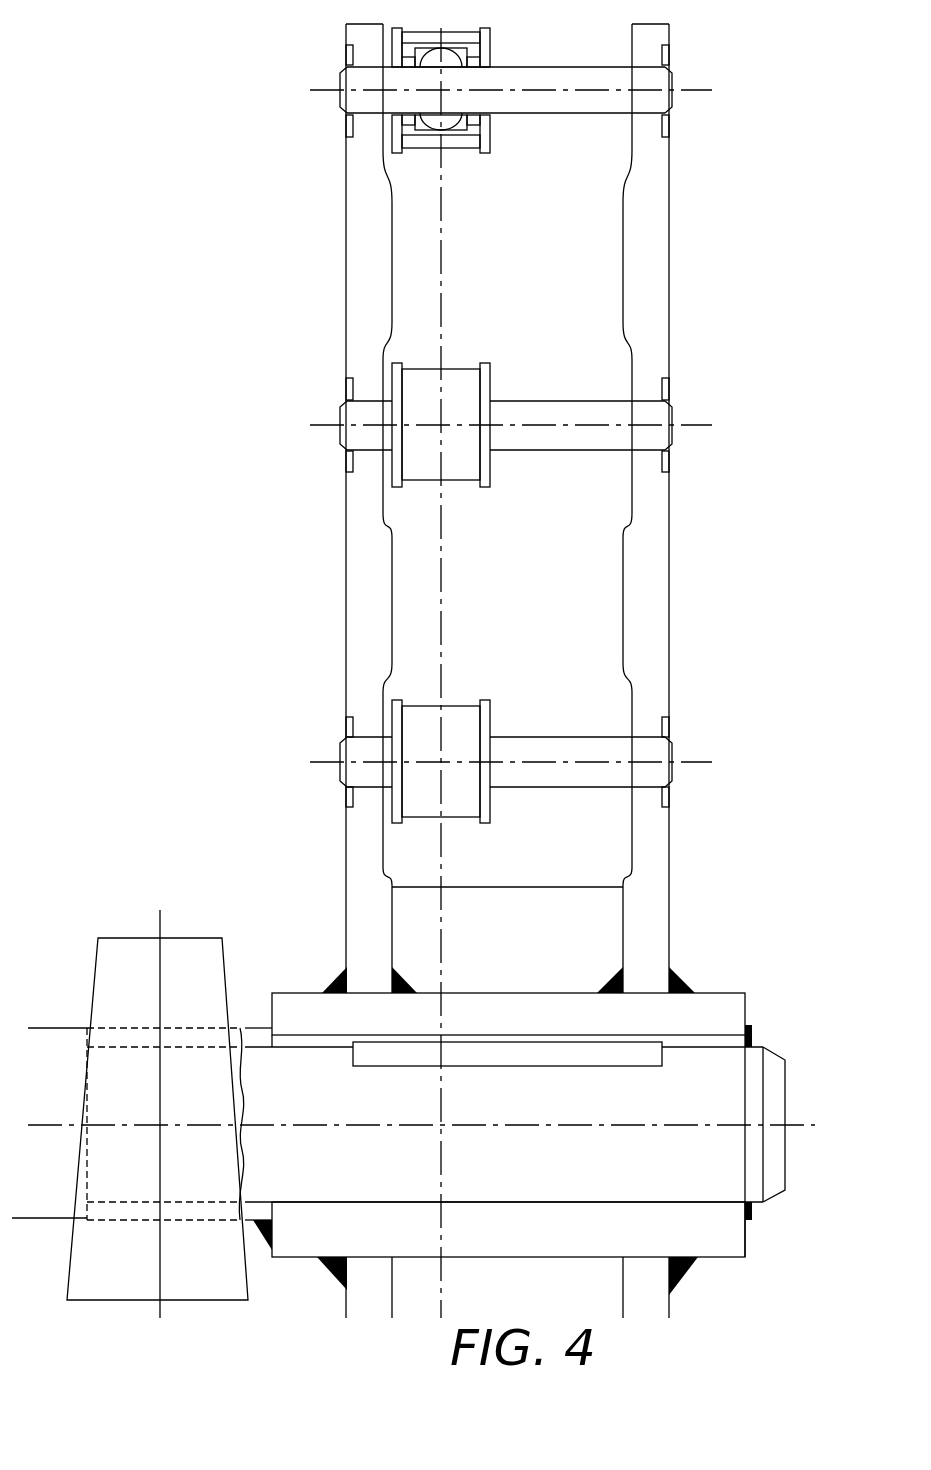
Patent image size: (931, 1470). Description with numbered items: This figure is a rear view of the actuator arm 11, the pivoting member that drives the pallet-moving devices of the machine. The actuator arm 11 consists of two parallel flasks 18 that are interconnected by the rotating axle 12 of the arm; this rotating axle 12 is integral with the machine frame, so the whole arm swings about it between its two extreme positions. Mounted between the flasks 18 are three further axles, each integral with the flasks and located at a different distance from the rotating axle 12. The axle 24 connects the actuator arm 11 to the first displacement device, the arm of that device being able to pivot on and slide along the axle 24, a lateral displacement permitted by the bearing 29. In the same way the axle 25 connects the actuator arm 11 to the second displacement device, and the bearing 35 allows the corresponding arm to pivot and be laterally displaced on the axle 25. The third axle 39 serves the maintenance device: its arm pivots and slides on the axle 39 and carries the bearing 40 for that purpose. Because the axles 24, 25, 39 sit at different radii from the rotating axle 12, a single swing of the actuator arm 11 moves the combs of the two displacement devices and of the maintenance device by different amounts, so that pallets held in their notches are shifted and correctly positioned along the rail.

The actuator arm 11 is at (340, 658).
The rotating axle 12 is at (325, 1123).
The flasks 18 is at (362, 247).
The axle 24 is at (563, 93).
The axle 25 is at (570, 427).
The bearing 29 is at (488, 50).
The bearing 35 is at (467, 457).
The axle 39 is at (560, 763).
The bearing 40 is at (462, 803).